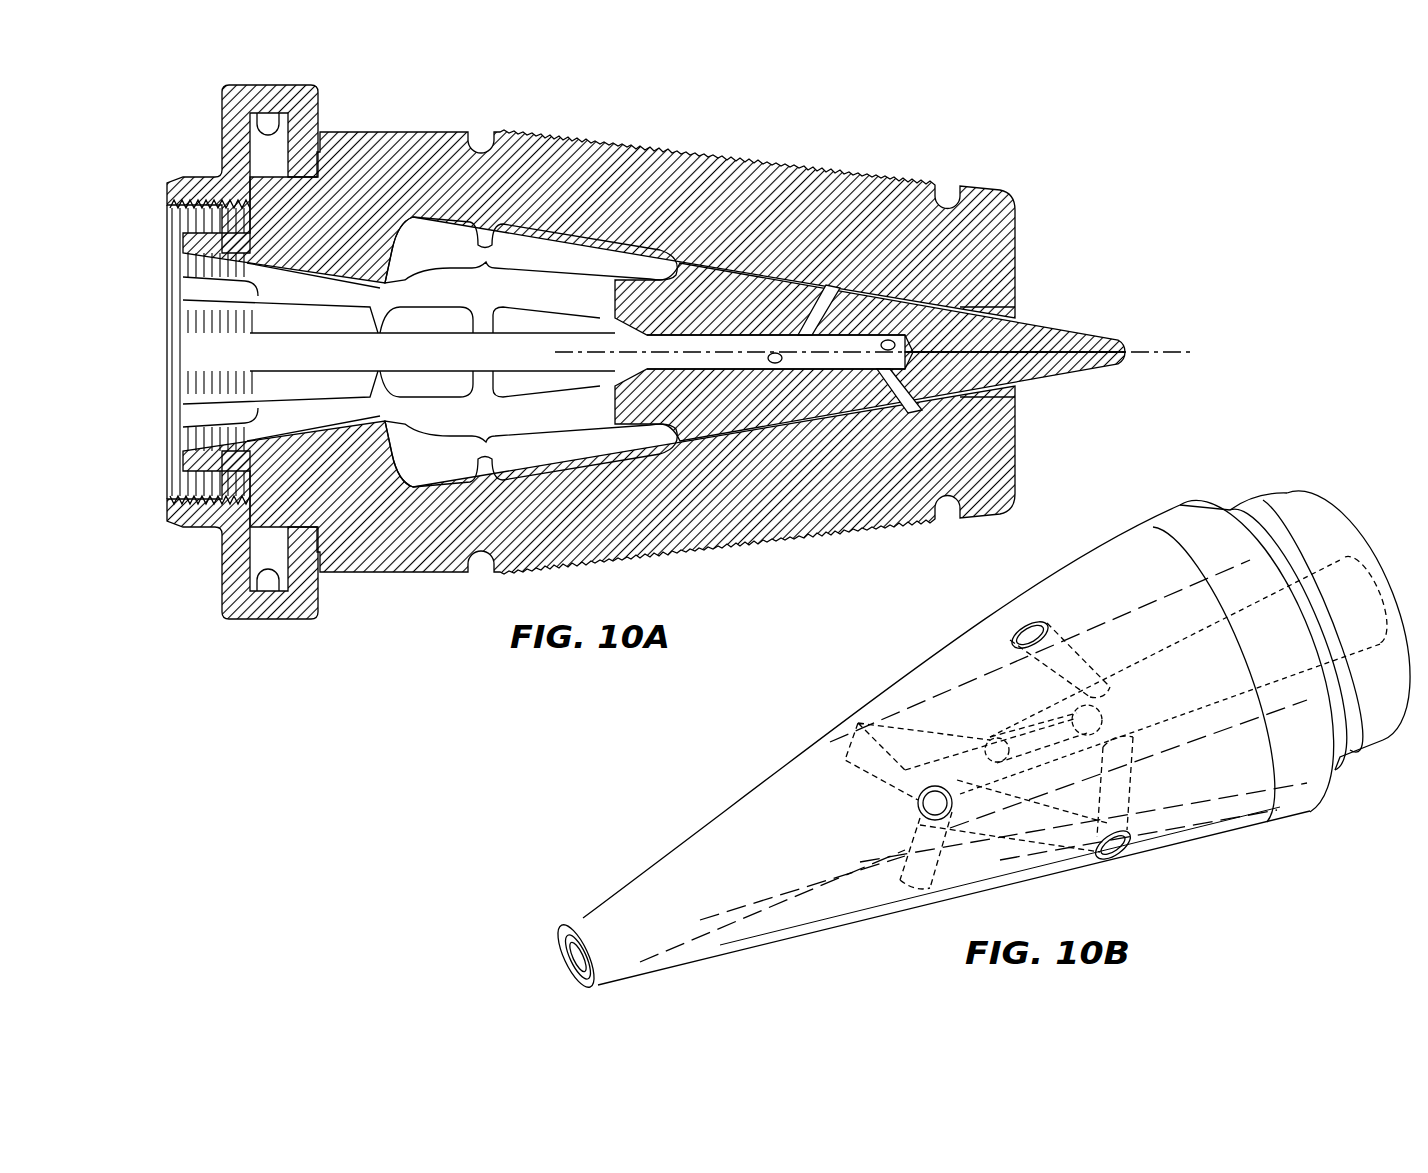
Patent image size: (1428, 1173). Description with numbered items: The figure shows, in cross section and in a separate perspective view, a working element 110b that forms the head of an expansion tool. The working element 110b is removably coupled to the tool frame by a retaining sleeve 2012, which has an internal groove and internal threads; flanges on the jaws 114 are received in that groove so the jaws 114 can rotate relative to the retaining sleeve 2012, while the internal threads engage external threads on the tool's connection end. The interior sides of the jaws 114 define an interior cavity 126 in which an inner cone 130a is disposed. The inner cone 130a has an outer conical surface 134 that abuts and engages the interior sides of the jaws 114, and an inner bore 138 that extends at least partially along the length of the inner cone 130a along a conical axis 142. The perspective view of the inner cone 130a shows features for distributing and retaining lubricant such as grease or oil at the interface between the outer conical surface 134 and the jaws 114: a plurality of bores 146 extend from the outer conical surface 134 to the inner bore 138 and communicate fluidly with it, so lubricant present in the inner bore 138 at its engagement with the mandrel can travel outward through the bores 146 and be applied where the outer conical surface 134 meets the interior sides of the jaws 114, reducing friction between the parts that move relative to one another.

In FIG. 10A, the retaining sleeve 2012 is at (310, 155).
In FIG. 10A, the jaws 114 is at (725, 195).
In FIG. 10A, the inner bore 138 is at (745, 345).
In FIG. 10A, the working element 110b is at (960, 105).
In FIG. 10A, the conical axis 142 is at (1138, 352).
In FIG. 10A, the interior cavity 126 is at (480, 360).
In FIG. 10A, the bores 146 is at (888, 352).
In FIG. 10B, the bores 146 is at (1140, 818).
In FIG. 10A, the inner cone 130a is at (935, 372).
In FIG. 10B, the inner cone 130a is at (648, 918).
In FIG. 10B, the outer conical surface 134 is at (822, 812).